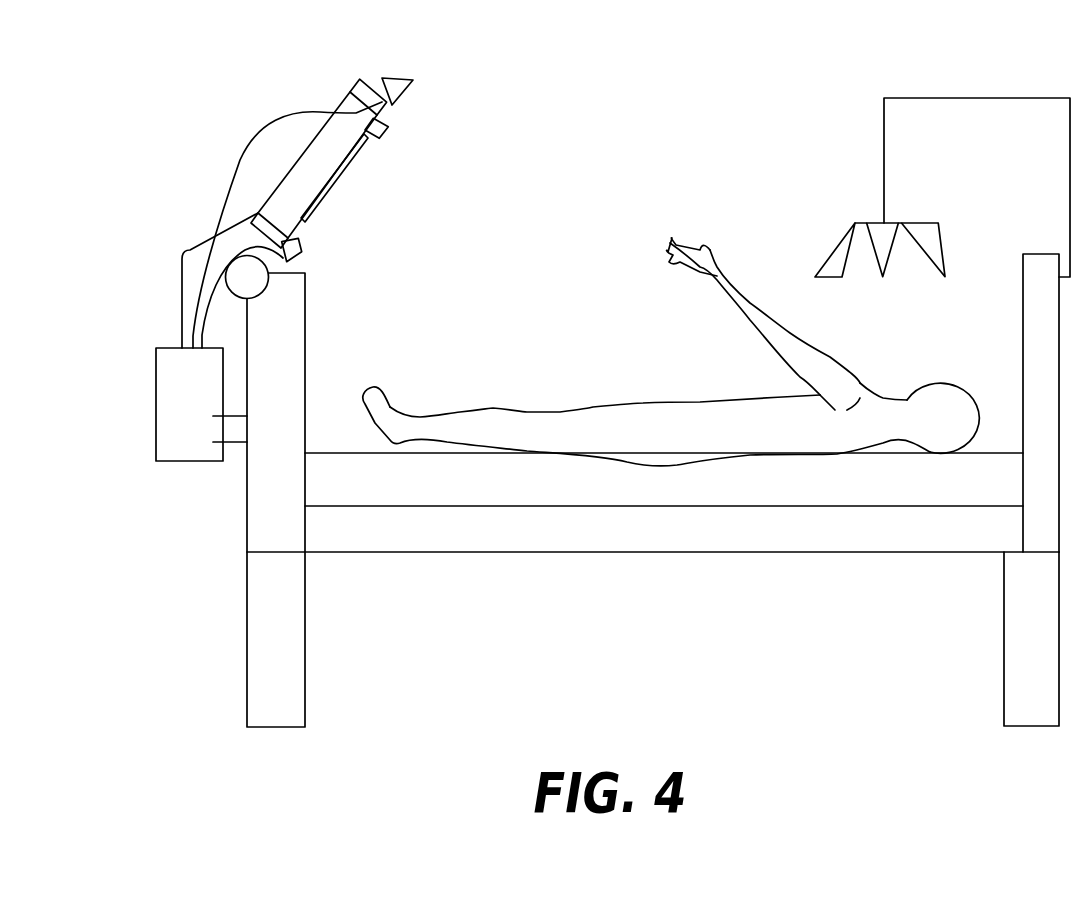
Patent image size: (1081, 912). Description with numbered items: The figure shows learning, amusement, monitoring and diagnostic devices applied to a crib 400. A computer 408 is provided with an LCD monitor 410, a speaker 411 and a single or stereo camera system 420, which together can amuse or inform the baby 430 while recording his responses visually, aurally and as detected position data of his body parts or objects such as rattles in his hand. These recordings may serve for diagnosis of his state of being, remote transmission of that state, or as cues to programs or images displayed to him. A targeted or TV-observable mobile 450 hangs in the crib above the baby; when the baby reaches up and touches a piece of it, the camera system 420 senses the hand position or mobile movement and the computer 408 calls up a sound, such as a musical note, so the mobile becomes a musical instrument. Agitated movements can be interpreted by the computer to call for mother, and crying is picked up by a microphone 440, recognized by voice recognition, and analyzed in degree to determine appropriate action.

The crib 400 is at (472, 553).
The computer 408 is at (192, 461).
The LCD monitor 410 is at (338, 182).
The speaker 411 is at (393, 78).
The camera system 420 is at (388, 125).
The baby 430 is at (722, 437).
The microphone 440 is at (253, 217).
The mobile 450 is at (832, 238).